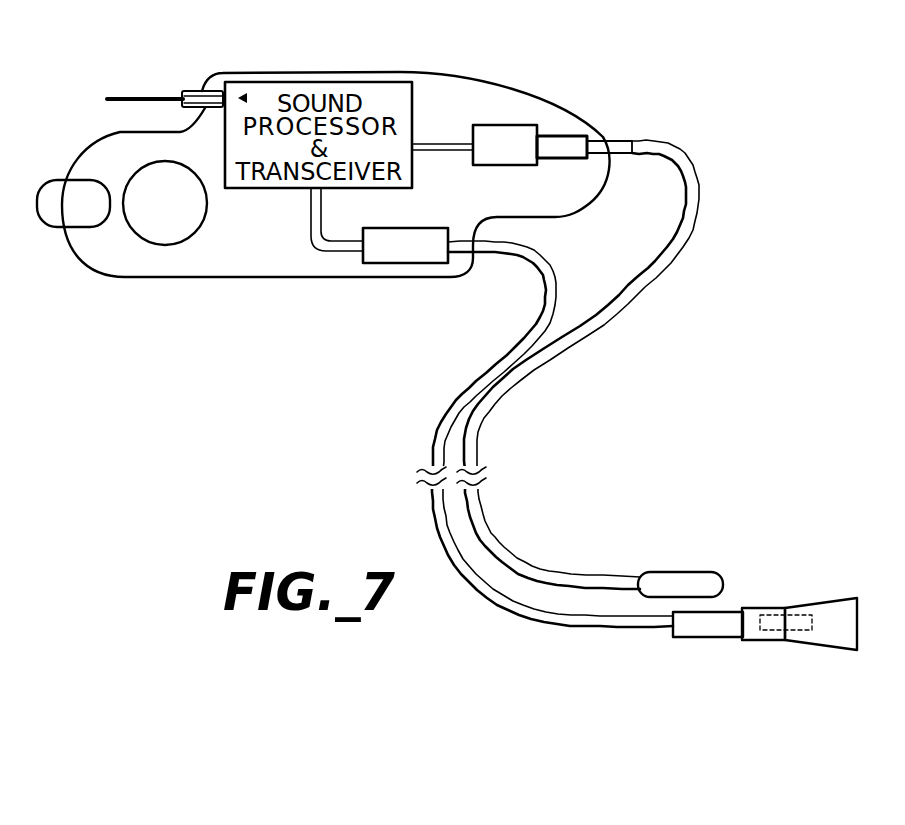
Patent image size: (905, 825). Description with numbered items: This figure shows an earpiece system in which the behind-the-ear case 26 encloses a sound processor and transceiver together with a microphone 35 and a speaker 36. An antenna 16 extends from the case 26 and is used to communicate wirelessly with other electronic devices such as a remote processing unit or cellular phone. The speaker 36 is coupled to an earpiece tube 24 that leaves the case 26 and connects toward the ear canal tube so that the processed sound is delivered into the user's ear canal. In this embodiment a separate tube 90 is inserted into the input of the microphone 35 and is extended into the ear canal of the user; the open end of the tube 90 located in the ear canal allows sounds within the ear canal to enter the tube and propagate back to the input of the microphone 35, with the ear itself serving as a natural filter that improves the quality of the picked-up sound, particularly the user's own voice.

The antenna 16 is at (158, 95).
The case 26 is at (430, 70).
The microphone 35 is at (513, 125).
The speaker 36 is at (415, 265).
The tube 90 is at (610, 320).
The earpiece tube 24 is at (430, 518).